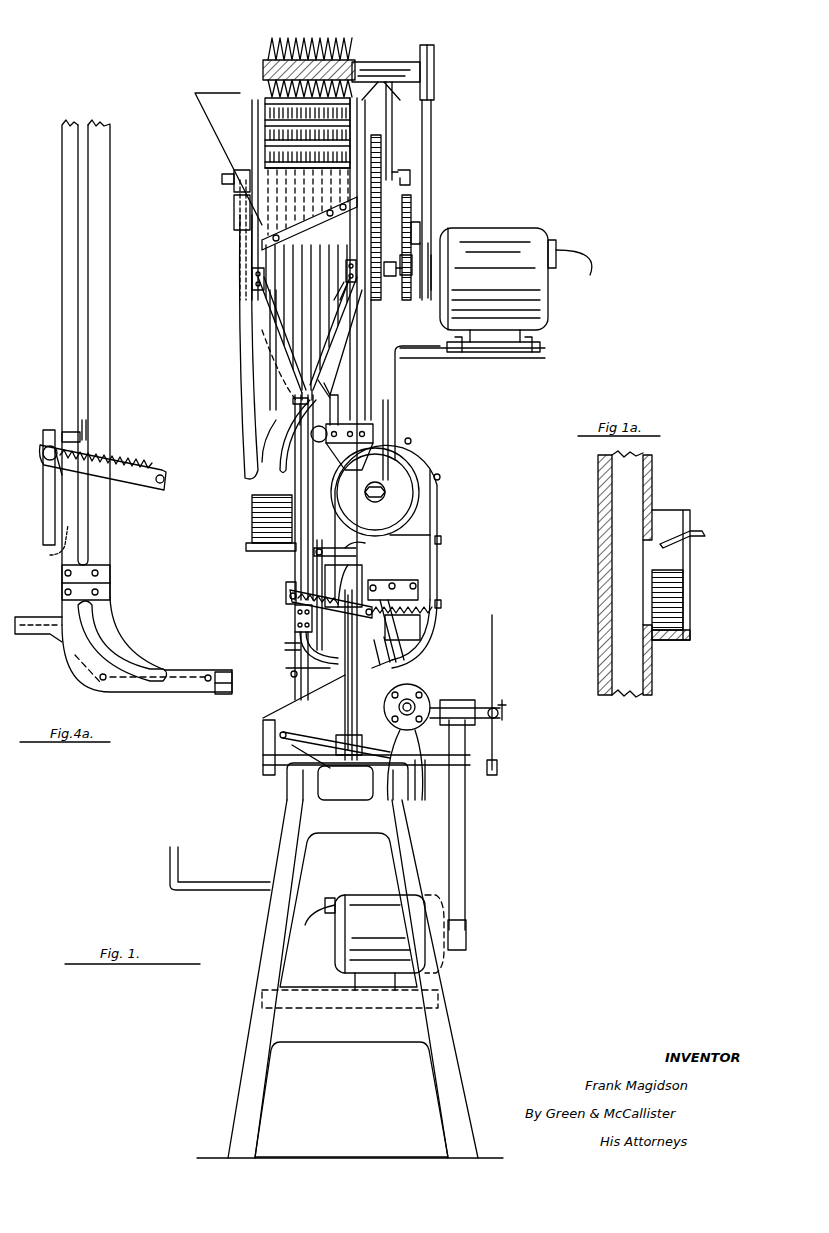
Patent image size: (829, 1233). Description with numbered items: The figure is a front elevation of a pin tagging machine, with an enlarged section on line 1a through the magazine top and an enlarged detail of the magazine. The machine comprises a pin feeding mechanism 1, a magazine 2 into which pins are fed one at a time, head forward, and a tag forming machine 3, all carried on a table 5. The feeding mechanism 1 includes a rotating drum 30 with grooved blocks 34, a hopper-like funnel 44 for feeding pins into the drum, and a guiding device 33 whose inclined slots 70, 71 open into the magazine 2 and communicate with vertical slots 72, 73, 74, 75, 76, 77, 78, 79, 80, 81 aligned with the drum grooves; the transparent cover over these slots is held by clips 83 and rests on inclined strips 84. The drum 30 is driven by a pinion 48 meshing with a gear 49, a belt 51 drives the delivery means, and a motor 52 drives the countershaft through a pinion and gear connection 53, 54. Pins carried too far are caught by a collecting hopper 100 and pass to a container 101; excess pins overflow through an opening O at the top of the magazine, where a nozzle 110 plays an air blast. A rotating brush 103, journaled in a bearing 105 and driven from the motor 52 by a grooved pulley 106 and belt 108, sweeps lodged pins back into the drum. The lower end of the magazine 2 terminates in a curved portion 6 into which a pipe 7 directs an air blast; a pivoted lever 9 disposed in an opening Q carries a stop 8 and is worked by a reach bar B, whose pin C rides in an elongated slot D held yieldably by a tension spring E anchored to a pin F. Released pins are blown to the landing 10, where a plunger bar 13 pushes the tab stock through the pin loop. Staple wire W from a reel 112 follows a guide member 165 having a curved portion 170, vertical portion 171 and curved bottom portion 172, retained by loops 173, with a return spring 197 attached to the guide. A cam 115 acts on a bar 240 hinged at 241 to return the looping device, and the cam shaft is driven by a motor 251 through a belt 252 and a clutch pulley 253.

In FIG. 1, the pin feeding mechanism 1 is at (185, 243).
In FIG. 1, the section line Ia—Ia 1a is at (336, 408).
In FIG. 1, the magazine 2 is at (296, 573).
In FIG. 4A, the magazine 2 is at (62, 312).
In FIG. 1A, the magazine 2 is at (598, 634).
In FIG. 1, the tag forming machine 3 is at (278, 691).
In FIG. 1, the table or support 5 is at (366, 819).
In FIG. 1, the curved portion 6 is at (300, 657).
In FIG. 4A, the curved portion 6 is at (125, 655).
In FIG. 1, the pipe 7 is at (292, 641).
In FIG. 4A, the pipe 7 is at (20, 632).
In FIG. 4A, the stop 8 is at (58, 565).
In FIG. 1, the pivoted lever 9 is at (288, 591).
In FIG. 4A, the pivoted lever 9 is at (45, 488).
In FIG. 1, the landing place 10 is at (322, 679).
In FIG. 1, the plunger bar 13 is at (350, 573).
In FIG. 1, the rotating drum 30 is at (252, 99).
In FIG. 1, the guiding device 33 is at (258, 355).
In FIG. 1, the blocks 34 is at (278, 162).
In FIG. 1, the hopper-like funnel 44 is at (215, 120).
In FIG. 1, the pinion 48 is at (405, 190).
In FIG. 1, the gear 49 is at (378, 145).
In FIG. 1, the belt 51 is at (392, 270).
In FIG. 1, the motor 52 is at (505, 232).
In FIG. 1, the pinion 53 is at (408, 278).
In FIG. 1, the gear 54 is at (418, 198).
In FIG. 1, the groove or slot 70 is at (292, 366).
In FIG. 1, the groove or slot 71 is at (326, 362).
In FIG. 1, the vertical slot 72 is at (262, 288).
In FIG. 1, the vertical slot 73 is at (278, 320).
In FIG. 1, the vertical slot 74 is at (283, 350).
In FIG. 1, the vertical slot 75 is at (290, 358).
In FIG. 1, the vertical slot 76 is at (298, 376).
In FIG. 1, the vertical slot 77 is at (330, 374).
In FIG. 1, the vertical slot 78 is at (320, 348).
In FIG. 1, the vertical slot 79 is at (346, 332).
In FIG. 1, the vertical slot 80 is at (340, 320).
In FIG. 1, the vertical slot 81 is at (346, 302).
In FIG. 1, the clips 83 is at (258, 276).
In FIG. 1, the inclined strips 84 is at (300, 404).
In FIG. 1, the collecting hopper 100 is at (240, 180).
In FIG. 1, the container 101 is at (256, 528).
In FIG. 1, the rotating brush 103 is at (270, 50).
In FIG. 1, the bearing 105 is at (398, 62).
In FIG. 1, the grooved pulley 106 is at (434, 58).
In FIG. 1, the belt 108 is at (435, 133).
In FIG. 1, the nozzle 110 is at (327, 432).
In FIG. 1A, the nozzle 110 is at (704, 532).
In FIG. 1, the reel 112 is at (388, 523).
In FIG. 1, the cam 115 is at (415, 775).
In FIG. 1, the guide member 165 is at (450, 559).
In FIG. 1, the curved portion 170 is at (424, 462).
In FIG. 1, the vertical portion 171 is at (428, 535).
In FIG. 1, the curved bottom portion 172 is at (414, 637).
In FIG. 1, the loops 173 is at (410, 440).
In FIG. 1, the spring 197 is at (422, 600).
In FIG. 1, the bar 240 is at (318, 770).
In FIG. 1, the hinge 241 is at (284, 740).
In FIG. 1, the motor 251 is at (363, 893).
In FIG. 1, the belt 252 is at (468, 876).
In FIG. 1, the clutch pulley 253 is at (462, 705).
In FIG. 1, the reach bar B is at (298, 627).
In FIG. 4A, the pin C is at (44, 458).
In FIG. 4A, the elongated slot D is at (44, 454).
In FIG. 1, the tension spring E is at (290, 606).
In FIG. 4A, the tension spring E is at (122, 462).
In FIG. 4A, the pin F is at (158, 472).
In FIG. 1, the opening O is at (292, 430).
In FIG. 4A, the opening Q is at (50, 555).
In FIG. 1, the wire W is at (342, 462).